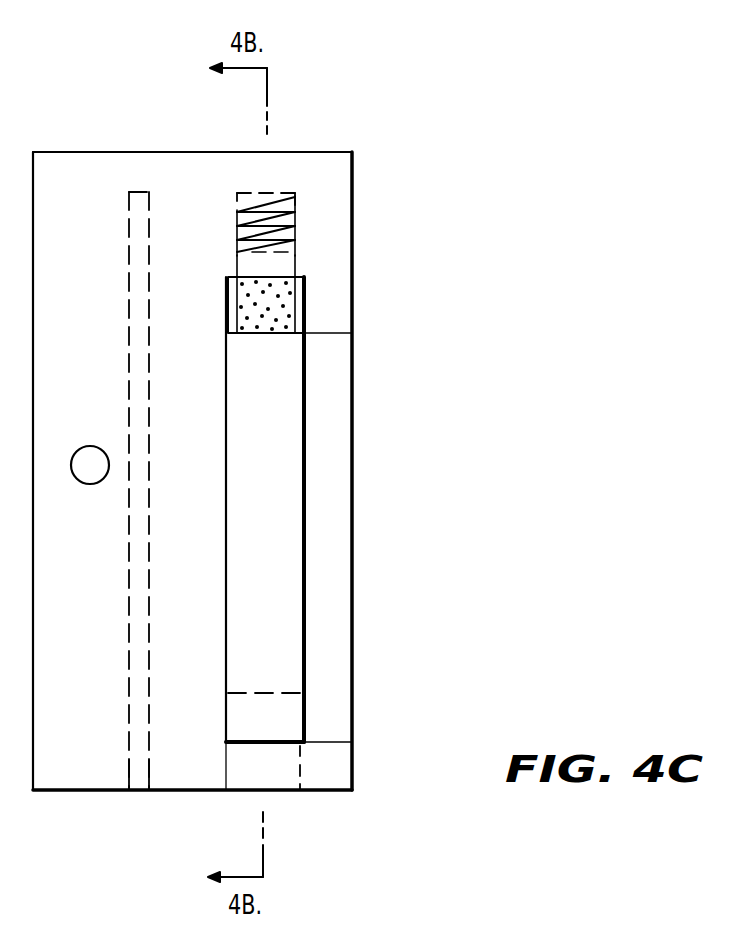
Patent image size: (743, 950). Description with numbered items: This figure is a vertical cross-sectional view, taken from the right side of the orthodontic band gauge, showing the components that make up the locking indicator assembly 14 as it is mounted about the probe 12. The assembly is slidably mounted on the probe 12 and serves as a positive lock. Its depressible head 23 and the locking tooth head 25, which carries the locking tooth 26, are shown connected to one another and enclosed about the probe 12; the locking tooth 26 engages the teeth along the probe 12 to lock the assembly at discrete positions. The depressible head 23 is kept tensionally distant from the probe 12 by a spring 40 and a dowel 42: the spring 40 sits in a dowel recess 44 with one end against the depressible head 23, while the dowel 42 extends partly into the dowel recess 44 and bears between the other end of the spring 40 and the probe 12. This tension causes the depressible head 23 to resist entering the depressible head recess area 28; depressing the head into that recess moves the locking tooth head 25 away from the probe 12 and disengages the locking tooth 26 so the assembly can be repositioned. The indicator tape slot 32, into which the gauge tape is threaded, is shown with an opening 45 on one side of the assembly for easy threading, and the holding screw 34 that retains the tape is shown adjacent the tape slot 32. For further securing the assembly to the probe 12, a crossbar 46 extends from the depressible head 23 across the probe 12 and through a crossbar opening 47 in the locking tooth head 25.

The probe 12 is at (290, 540).
The locking indicator assembly 14 is at (172, 151).
The depressible head 23 is at (340, 178).
The locking tooth head 25 is at (232, 768).
The locking tooth 26 is at (292, 712).
The depressible head recess area 28 is at (296, 285).
The indicator tape slot 32 is at (128, 210).
The holding screw 34 is at (80, 475).
The spring 40 is at (270, 199).
The dowel 42 is at (288, 318).
The dowel recess 44 is at (240, 202).
The opening 45 is at (139, 783).
The crossbar 46 is at (345, 457).
The crossbar opening 47 is at (329, 772).